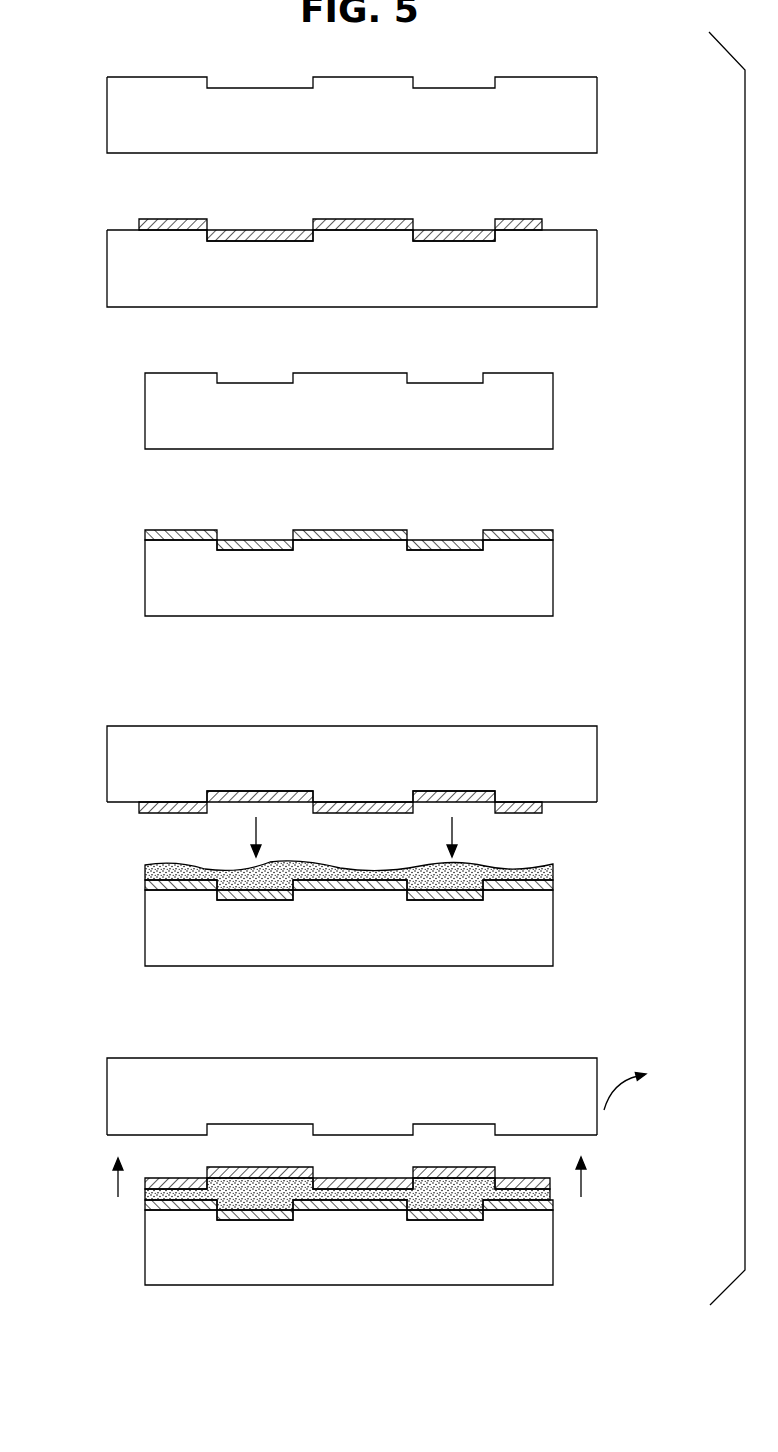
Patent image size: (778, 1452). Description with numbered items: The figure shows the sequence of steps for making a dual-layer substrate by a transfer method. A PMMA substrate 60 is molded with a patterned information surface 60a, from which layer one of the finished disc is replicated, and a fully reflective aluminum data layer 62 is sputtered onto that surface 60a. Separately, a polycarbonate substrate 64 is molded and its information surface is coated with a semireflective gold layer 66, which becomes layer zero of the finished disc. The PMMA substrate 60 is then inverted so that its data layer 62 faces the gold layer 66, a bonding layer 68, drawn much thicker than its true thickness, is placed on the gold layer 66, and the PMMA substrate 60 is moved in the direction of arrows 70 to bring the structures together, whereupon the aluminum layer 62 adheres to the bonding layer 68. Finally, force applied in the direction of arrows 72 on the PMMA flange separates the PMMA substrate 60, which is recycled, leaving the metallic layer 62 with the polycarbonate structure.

The PMMA substrate 60 is at (404, 584).
The surface 60a is at (547, 77).
The aluminum data layer 62 is at (500, 218).
The substrate 64 is at (553, 400).
The semireflective gold layer 66 is at (507, 530).
The bonding layer 68 is at (162, 864).
The arrows 70 is at (450, 827).
The arrows 72 is at (114, 1186).